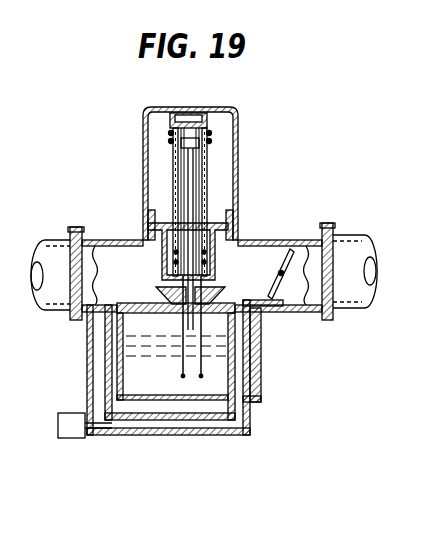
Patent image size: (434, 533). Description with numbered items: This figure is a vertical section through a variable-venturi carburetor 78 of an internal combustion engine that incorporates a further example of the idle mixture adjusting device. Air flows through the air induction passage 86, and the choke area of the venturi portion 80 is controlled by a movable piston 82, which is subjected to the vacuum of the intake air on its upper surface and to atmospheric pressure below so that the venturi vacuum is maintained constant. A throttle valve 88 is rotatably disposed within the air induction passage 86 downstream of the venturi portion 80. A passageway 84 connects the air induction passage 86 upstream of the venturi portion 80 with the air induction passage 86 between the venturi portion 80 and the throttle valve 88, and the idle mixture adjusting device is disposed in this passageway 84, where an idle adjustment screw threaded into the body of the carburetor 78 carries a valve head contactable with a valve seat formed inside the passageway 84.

The variable-venturi carburetor 78 is at (247, 156).
The air induction passage 86 is at (271, 242).
The movable piston 82 is at (220, 256).
The venturi portion 80 is at (165, 290).
The throttle valve 88 is at (282, 282).
The passageway 84 is at (172, 437).